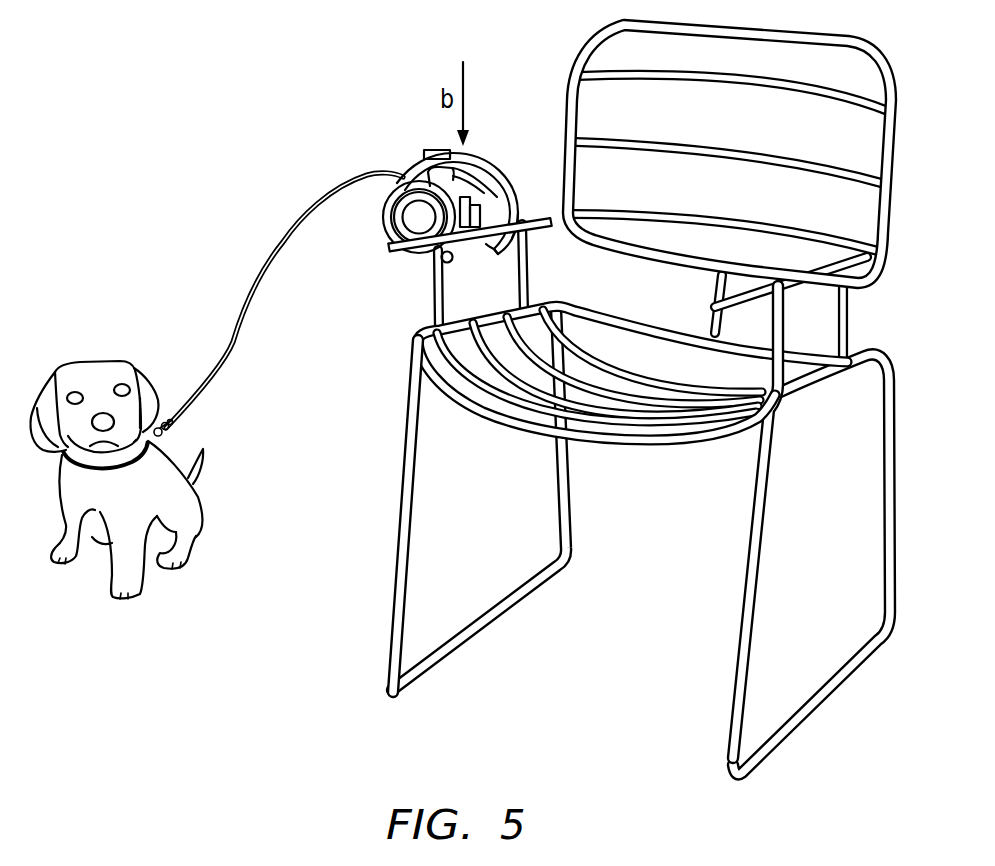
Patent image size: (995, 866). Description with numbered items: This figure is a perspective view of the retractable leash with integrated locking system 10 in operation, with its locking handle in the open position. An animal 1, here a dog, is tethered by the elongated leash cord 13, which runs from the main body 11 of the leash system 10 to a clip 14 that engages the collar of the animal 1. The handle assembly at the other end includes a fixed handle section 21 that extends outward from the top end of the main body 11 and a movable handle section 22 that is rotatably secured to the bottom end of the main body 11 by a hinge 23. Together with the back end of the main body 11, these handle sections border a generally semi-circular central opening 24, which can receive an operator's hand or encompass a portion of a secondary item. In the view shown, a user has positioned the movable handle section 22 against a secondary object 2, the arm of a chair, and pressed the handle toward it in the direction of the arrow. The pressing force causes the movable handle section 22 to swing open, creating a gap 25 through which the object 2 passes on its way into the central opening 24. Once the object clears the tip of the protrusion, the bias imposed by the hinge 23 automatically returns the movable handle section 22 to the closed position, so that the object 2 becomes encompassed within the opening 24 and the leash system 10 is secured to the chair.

The animal 1 is at (97, 375).
The secondary object 2 is at (397, 252).
The leash system 10 is at (465, 164).
The main body 11 is at (385, 212).
The elongated leash cord 13 is at (310, 200).
The clip 14 is at (154, 418).
The fixed handle section 21 is at (480, 162).
The movable handle section 22 is at (507, 217).
The hinge 23 is at (452, 263).
The central opening 24 is at (493, 203).
The gap 25 is at (479, 251).